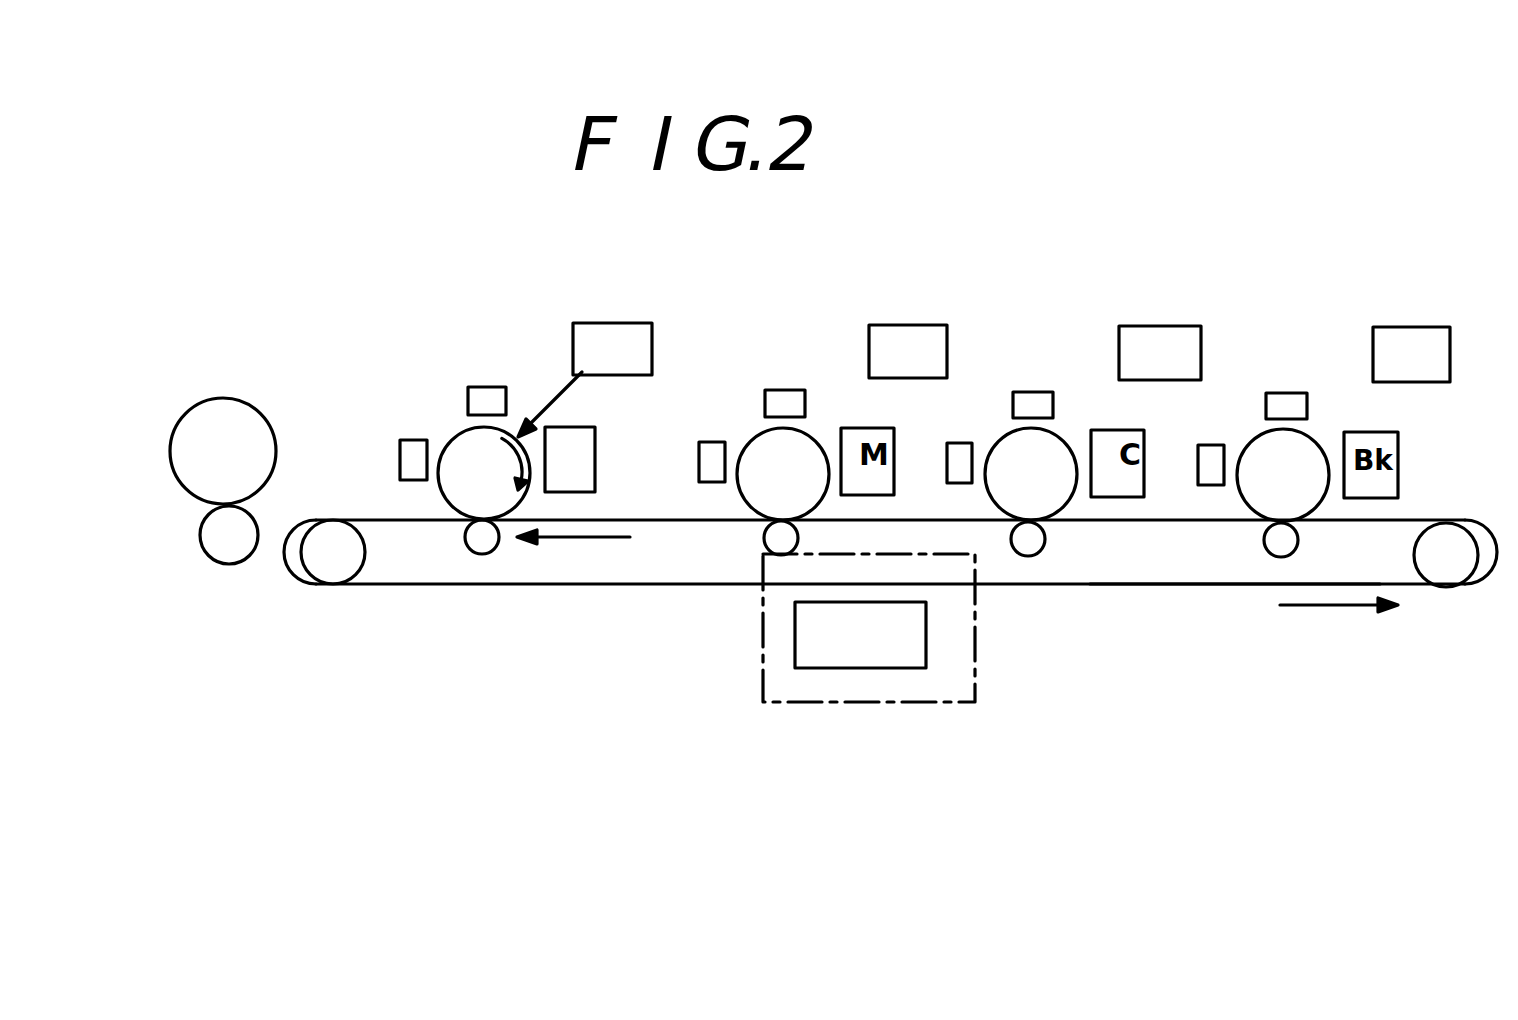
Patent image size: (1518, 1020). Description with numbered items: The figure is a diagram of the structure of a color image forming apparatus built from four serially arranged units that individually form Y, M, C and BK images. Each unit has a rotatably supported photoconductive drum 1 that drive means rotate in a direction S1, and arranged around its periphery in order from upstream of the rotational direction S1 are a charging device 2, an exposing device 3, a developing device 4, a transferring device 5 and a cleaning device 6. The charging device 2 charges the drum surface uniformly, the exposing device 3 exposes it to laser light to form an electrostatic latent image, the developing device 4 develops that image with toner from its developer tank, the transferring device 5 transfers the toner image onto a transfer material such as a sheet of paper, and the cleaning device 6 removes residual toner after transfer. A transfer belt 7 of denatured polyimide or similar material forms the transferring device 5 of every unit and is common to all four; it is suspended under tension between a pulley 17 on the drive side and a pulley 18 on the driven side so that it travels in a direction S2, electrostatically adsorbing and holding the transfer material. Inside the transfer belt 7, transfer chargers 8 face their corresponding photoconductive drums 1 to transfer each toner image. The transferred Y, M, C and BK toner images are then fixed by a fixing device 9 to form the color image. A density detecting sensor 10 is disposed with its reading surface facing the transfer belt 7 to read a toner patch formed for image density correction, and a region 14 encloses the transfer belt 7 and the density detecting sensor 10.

The photoconductive drum 1 is at (467, 498).
The charging device 2 is at (483, 402).
The exposing device 3 is at (609, 345).
The developing device 4 is at (596, 462).
The transferring device 5 is at (675, 520).
The cleaning device 6 is at (400, 461).
The transfer belt 7 is at (1118, 597).
The transfer charger 8 is at (490, 574).
The fixing device 9 is at (216, 416).
The density detecting sensor 10 is at (902, 650).
The region 14 is at (915, 702).
The pulley on the drive side 17 is at (333, 568).
The pulley on the driven side 18 is at (1450, 570).
The rotational direction S1 is at (513, 457).
The travel direction S2 is at (590, 540).